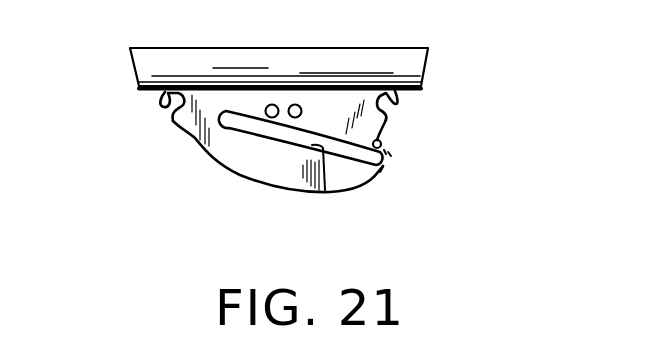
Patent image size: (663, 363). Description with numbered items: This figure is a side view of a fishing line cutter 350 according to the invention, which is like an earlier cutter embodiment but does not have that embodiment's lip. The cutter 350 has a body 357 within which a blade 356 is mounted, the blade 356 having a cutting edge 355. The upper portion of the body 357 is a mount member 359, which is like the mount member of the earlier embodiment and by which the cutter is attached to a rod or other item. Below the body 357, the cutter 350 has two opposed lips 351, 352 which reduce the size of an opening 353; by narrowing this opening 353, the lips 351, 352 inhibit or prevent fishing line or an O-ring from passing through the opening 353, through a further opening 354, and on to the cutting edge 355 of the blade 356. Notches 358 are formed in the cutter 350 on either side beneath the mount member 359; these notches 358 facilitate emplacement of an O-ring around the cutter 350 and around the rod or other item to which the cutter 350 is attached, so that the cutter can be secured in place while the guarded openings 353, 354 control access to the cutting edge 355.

The line cutter 350 is at (323, 44).
The lip 351 is at (383, 168).
The lip 352 is at (387, 147).
The opening 353 is at (391, 150).
The opening 354 is at (316, 182).
The cutting edge 355 is at (257, 134).
The blade 356 is at (240, 125).
The body 357 is at (384, 133).
The notches 358 is at (164, 107).
The mount member 359 is at (410, 62).